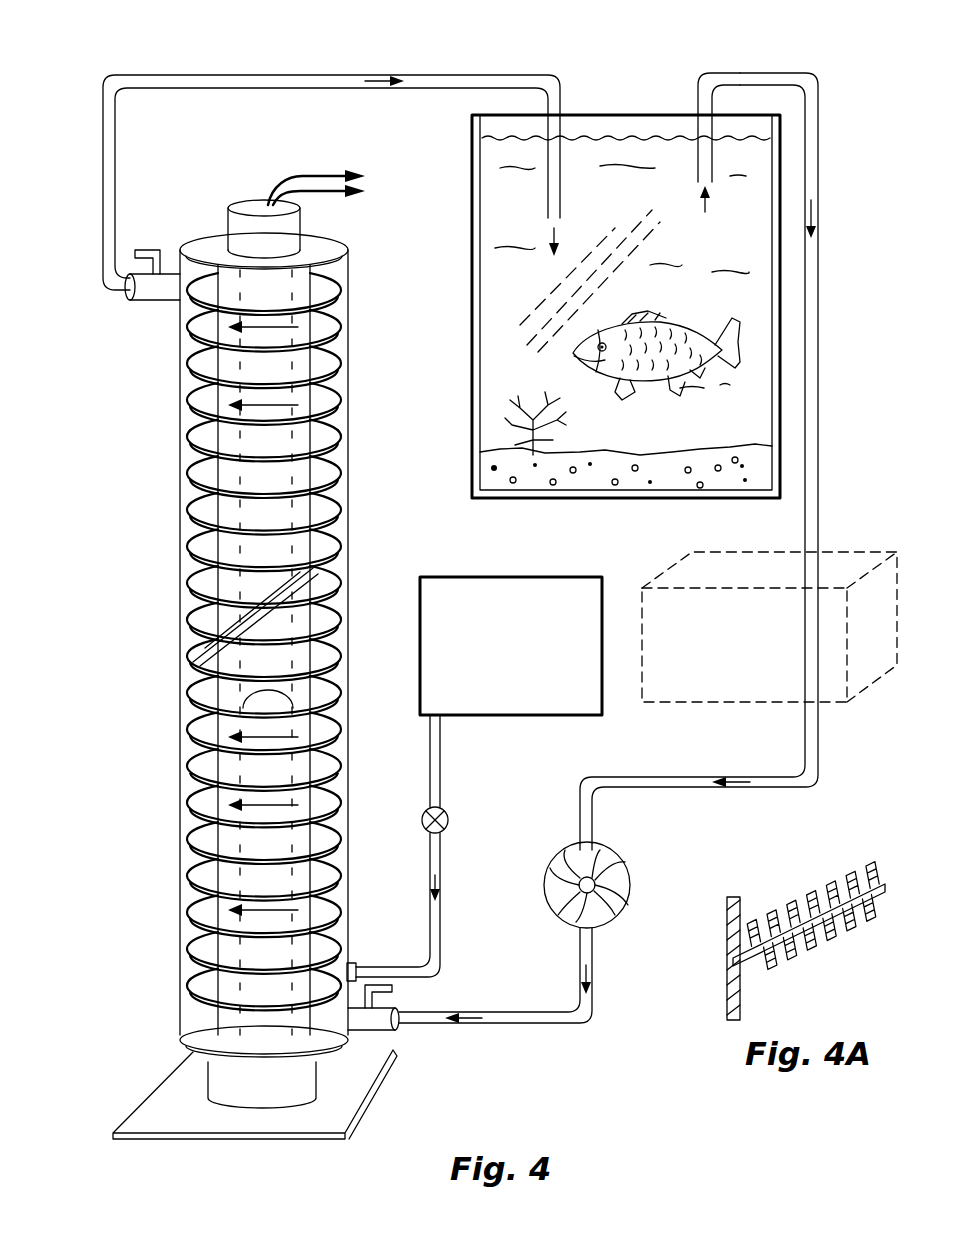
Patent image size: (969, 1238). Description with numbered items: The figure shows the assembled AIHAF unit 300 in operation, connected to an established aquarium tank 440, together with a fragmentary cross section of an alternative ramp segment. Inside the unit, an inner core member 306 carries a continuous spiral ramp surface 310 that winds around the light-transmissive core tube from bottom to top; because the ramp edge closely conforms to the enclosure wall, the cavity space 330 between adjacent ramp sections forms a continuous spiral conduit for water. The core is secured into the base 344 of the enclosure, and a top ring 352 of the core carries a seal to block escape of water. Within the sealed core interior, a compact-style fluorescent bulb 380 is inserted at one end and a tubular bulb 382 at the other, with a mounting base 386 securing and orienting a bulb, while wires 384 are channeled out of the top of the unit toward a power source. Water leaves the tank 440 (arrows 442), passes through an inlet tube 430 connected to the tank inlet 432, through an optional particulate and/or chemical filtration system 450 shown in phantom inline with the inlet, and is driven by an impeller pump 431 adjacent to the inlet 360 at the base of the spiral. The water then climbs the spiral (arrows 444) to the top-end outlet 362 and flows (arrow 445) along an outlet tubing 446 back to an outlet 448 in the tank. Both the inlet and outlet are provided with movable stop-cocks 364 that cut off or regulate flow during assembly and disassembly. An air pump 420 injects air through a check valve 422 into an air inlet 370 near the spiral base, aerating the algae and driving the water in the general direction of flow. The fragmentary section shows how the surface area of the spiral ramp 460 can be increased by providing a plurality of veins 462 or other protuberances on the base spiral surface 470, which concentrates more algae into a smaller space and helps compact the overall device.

In FIG. 4, the AIHAF unit 300 is at (196, 161).
In FIG. 4, the inner core member 306 is at (320, 432).
In FIG. 4, the spiral ramp surface 310 is at (353, 537).
In FIG. 4, the cavity space 330 is at (197, 685).
In FIG. 4, the base of the enclosure 344 is at (205, 1125).
In FIG. 4, the top ring 352 is at (343, 233).
In FIG. 4, the inlet 360 is at (397, 1033).
In FIG. 4, the outlet 362 is at (163, 296).
In FIG. 4, the stop-cock 364 is at (144, 248).
In FIG. 4, the air inlet 370 is at (357, 962).
In FIG. 4, the compact-style fluorescent bulb 380 is at (290, 299).
In FIG. 4, the tubular fluorescent or incandescent bulb 382 is at (252, 770).
In FIG. 4, the wires 384 is at (304, 186).
In FIG. 4, the mounting base 386 is at (230, 216).
In FIG. 4, the air pump 420 is at (600, 577).
In FIG. 4, the check valve 422 is at (441, 816).
In FIG. 4, the inlet tube 430 is at (622, 795).
In FIG. 4, the impeller pump 431 is at (612, 923).
In FIG. 4, the tank inlet 432 is at (695, 170).
In FIG. 4, the aquarium tank 440 is at (740, 205).
In FIG. 4, the water flow arrows 442 is at (818, 208).
In FIG. 4, the spiral flow arrows 444 is at (262, 407).
In FIG. 4, the outlet flow arrow 445 is at (393, 74).
In FIG. 4, the outlet tubing 446 is at (300, 75).
In FIG. 4, the tank outlet 448 is at (561, 181).
In FIG. 4, the optional particulate and/or chemical filtration system 450 is at (690, 705).
In FIG. 4A, the spiral ramp 460 is at (832, 918).
In FIG. 4A, the veins 462 is at (793, 900).
In FIG. 4A, the base spiral surface 470 is at (882, 886).